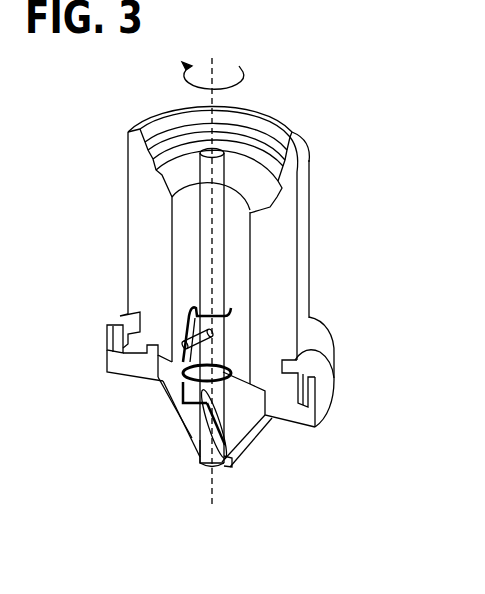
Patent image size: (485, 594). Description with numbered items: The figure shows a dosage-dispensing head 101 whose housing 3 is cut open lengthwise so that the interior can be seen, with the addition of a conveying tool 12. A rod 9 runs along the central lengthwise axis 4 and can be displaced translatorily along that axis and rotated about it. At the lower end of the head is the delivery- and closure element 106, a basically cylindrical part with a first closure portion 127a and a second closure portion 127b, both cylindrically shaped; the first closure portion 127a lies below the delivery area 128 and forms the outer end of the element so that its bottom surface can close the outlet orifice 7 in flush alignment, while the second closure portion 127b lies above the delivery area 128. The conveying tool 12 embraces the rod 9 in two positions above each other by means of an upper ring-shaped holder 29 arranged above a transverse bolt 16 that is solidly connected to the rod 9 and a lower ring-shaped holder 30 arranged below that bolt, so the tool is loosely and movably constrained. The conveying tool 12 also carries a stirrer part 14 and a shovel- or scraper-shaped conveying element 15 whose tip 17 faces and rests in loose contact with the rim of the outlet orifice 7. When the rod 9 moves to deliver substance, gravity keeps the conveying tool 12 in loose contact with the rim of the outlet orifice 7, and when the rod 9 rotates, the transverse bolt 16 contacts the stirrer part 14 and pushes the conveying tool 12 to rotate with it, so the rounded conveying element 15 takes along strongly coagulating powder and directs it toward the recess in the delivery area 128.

The housing 3 is at (100, 378).
The central lengthwise axis 4 is at (214, 102).
The outlet orifice 7 is at (222, 466).
The rod 9 is at (205, 263).
The conveying tool 12 is at (172, 328).
The stirrer part 14 is at (170, 351).
The conveying element 15 is at (222, 432).
The transverse bolt 16 is at (205, 342).
The tip 17 is at (226, 462).
The upper ring-shaped holder 29 is at (207, 333).
The lower ring-shaped holder 30 is at (234, 365).
The dosage-dispensing head 101 is at (321, 162).
The delivery- and closure element 106 is at (188, 442).
The first closure portion 127a is at (201, 463).
The second closure portion 127b is at (205, 395).
The delivery area 128 is at (197, 430).